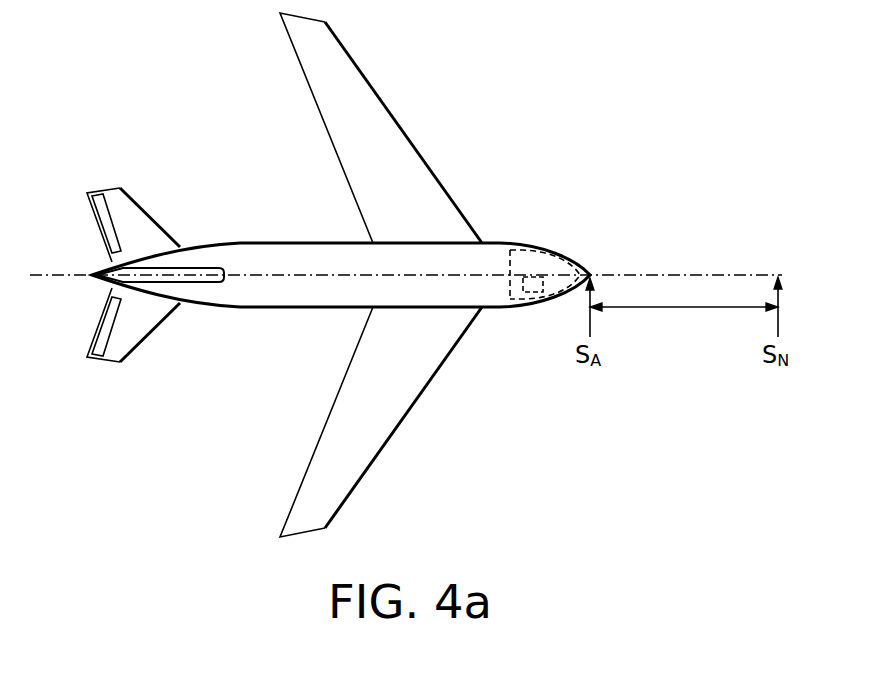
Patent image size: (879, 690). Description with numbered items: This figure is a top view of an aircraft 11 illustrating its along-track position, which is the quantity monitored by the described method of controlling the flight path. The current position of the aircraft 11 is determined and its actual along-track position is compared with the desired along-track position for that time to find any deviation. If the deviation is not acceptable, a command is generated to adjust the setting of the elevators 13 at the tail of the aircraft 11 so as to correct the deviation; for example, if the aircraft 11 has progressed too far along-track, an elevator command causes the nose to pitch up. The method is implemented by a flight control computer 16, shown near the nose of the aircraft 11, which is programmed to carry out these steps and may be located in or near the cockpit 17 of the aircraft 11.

The aircraft 11 is at (428, 128).
The elevator 13 is at (104, 223).
The flight control computer 16 is at (533, 296).
The cockpit 17 is at (526, 258).